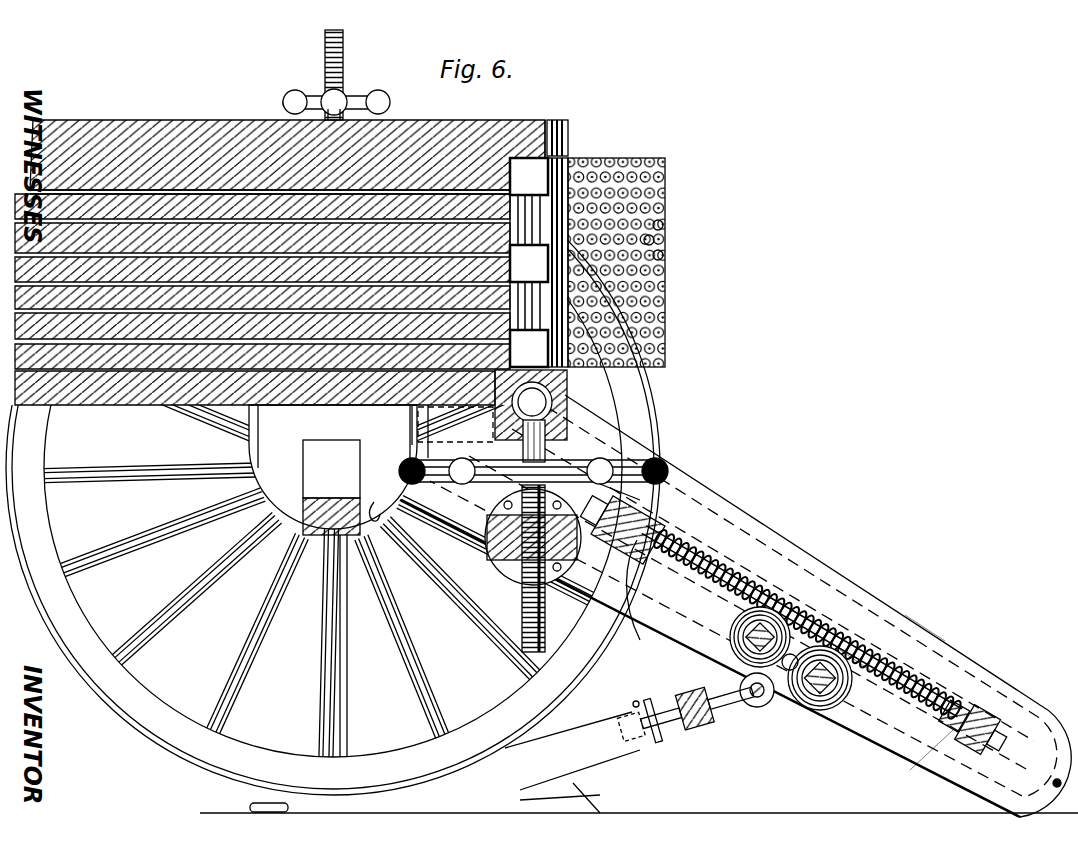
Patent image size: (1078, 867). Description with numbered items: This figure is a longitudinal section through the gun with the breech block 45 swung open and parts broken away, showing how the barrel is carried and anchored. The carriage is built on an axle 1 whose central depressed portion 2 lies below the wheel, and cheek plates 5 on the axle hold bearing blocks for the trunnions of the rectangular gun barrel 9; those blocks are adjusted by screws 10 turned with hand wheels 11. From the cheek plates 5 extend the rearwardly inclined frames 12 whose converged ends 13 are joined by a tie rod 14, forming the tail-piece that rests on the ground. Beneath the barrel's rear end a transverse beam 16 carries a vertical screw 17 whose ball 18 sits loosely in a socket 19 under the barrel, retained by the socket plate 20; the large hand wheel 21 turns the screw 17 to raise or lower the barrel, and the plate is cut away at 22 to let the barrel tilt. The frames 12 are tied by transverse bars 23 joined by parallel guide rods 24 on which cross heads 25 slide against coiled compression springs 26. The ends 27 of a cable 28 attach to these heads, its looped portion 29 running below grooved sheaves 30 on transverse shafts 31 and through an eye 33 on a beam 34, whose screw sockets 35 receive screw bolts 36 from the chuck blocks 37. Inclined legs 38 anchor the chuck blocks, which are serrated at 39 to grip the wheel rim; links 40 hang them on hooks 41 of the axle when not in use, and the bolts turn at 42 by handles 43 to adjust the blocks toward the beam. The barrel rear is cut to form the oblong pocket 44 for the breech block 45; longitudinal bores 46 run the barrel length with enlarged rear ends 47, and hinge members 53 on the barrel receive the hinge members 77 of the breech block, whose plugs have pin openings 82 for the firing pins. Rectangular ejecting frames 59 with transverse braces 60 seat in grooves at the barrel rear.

The axle 1 is at (308, 458).
The central depressed portion 2 is at (321, 568).
The cheek plates 5 is at (333, 467).
The gun barrel 9 is at (148, 132).
The screws 10 is at (343, 52).
The hand wheels 11 is at (350, 96).
The inclined frames 12 is at (720, 497).
The ends 13 is at (923, 629).
The tie rod 14 is at (1057, 780).
The transverse beam 16 is at (487, 562).
The vertical screw 17 is at (517, 637).
The ball 18 is at (552, 402).
The socket 19 is at (451, 431).
The socket plate 20 is at (640, 450).
The hand wheel 21 is at (613, 517).
The cut away portion 22 is at (600, 440).
The transverse bars 23 is at (660, 513).
The guide rods 24 is at (1010, 755).
The cross heads 25 is at (665, 520).
The coiled compression springs 26 is at (820, 650).
The ends of cable 27 is at (953, 730).
The cable 28 is at (863, 647).
The looped portion 29 is at (767, 673).
The grooved sheaves 30 is at (823, 700).
The transverse shafts 31 is at (753, 637).
The eye 33 is at (740, 707).
The beam 34 is at (736, 744).
The screw sockets 35 is at (688, 758).
The screw bolts 36 is at (650, 760).
The chuck blocks 37 is at (580, 737).
The inclined legs 38 is at (583, 795).
The teeth or serrations 39 is at (560, 742).
The links 40 is at (280, 795).
The hooks 41 is at (376, 488).
The rotatable connection 42 is at (635, 707).
The handles 43 is at (664, 764).
The oblong pocket 44 is at (552, 124).
The breech block 45 is at (630, 165).
The longitudinal bores 46 is at (418, 150).
The enlarged rear ends 47 is at (510, 147).
The hinge members 53 is at (538, 178).
The ejecting frames 59 is at (391, 425).
The transverse braces 60 is at (531, 263).
The hinge members 77 is at (535, 222).
The pin openings 82 is at (650, 256).